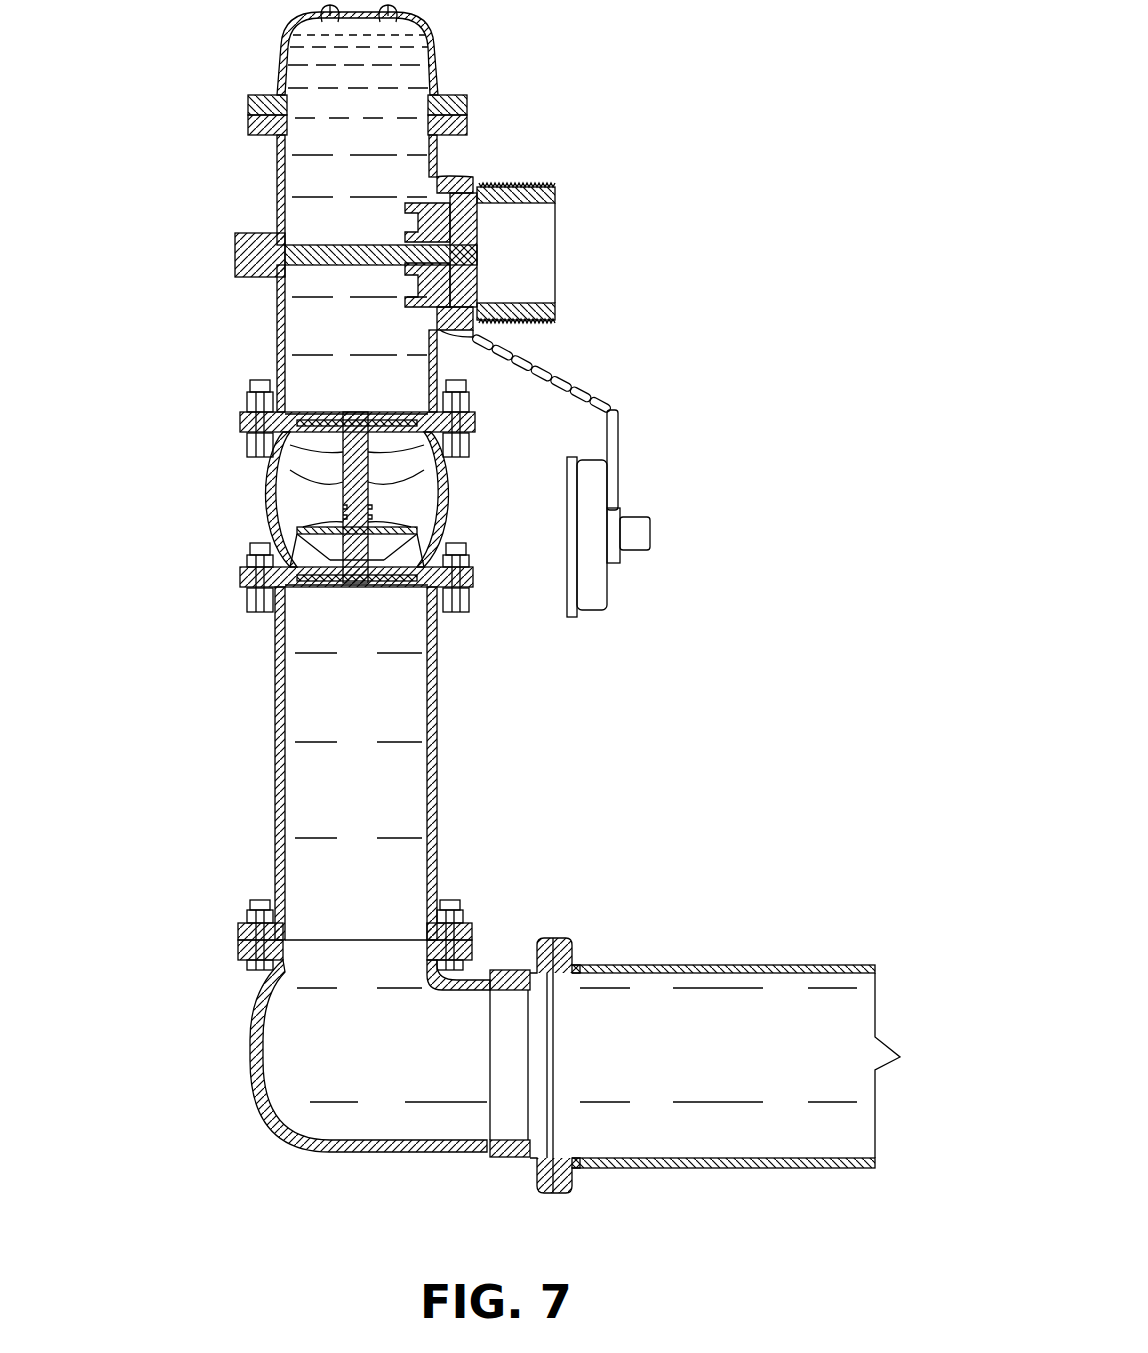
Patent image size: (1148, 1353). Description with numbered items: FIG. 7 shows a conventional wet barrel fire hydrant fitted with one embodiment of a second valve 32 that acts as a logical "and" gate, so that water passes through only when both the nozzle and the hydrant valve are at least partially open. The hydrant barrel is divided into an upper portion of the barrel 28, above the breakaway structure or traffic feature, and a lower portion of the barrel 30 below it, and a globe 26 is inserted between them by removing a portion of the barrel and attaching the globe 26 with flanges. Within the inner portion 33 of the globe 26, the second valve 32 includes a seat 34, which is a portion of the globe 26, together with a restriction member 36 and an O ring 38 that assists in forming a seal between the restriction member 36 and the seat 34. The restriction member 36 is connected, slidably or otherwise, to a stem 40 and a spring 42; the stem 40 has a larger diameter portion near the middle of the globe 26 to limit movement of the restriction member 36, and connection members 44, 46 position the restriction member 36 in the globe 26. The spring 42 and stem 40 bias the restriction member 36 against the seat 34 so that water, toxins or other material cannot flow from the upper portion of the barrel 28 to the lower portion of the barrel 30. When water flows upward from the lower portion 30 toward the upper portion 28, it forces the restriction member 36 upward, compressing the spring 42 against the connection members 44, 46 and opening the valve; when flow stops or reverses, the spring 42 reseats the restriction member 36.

The globe 26 is at (258, 490).
The upper portion of the barrel 28 is at (275, 327).
The lower portion of the barrel 30 is at (275, 800).
The second valve 32 is at (390, 475).
The inner portion of the globe 33 is at (447, 490).
The seat 34 is at (250, 543).
The restriction member 36 is at (392, 510).
The O ring 38 is at (410, 527).
The stem 40 is at (277, 467).
The spring 42 is at (297, 530).
The connection member 44 is at (323, 418).
The connection member 46 is at (323, 575).